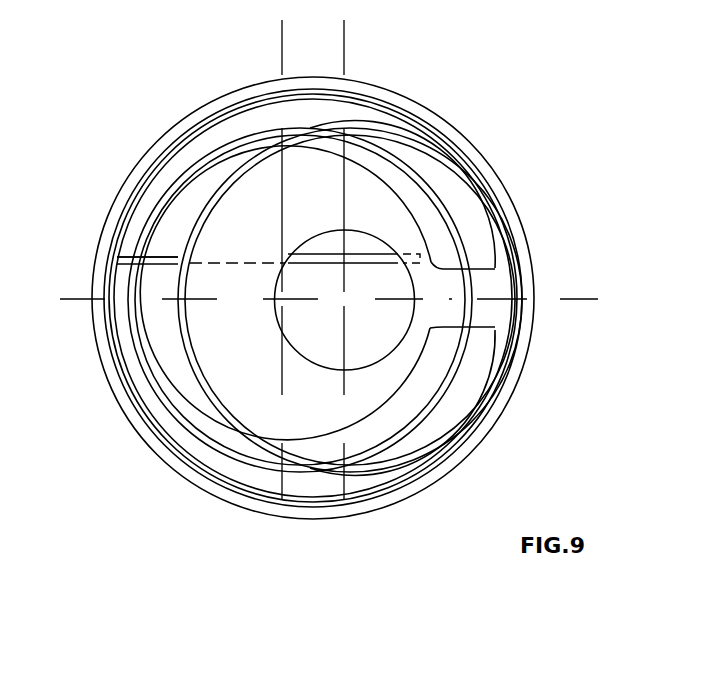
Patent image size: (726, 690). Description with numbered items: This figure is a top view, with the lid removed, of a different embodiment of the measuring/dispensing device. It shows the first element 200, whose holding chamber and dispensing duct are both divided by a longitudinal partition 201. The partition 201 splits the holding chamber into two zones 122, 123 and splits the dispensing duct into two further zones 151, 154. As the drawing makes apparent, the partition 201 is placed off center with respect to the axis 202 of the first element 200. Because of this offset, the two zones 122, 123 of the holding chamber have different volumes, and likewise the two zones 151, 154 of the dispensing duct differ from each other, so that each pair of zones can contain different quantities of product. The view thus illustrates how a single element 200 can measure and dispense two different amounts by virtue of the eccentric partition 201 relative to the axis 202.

The first element 200 is at (523, 183).
The longitudinal partition 201 is at (362, 262).
The axis 202 is at (598, 300).
The zone of the holding chamber 122 is at (313, 248).
The zone of the holding chamber 123 is at (318, 283).
The zone of the dispensing duct 151 is at (176, 248).
The zone of the dispensing duct 154 is at (160, 283).